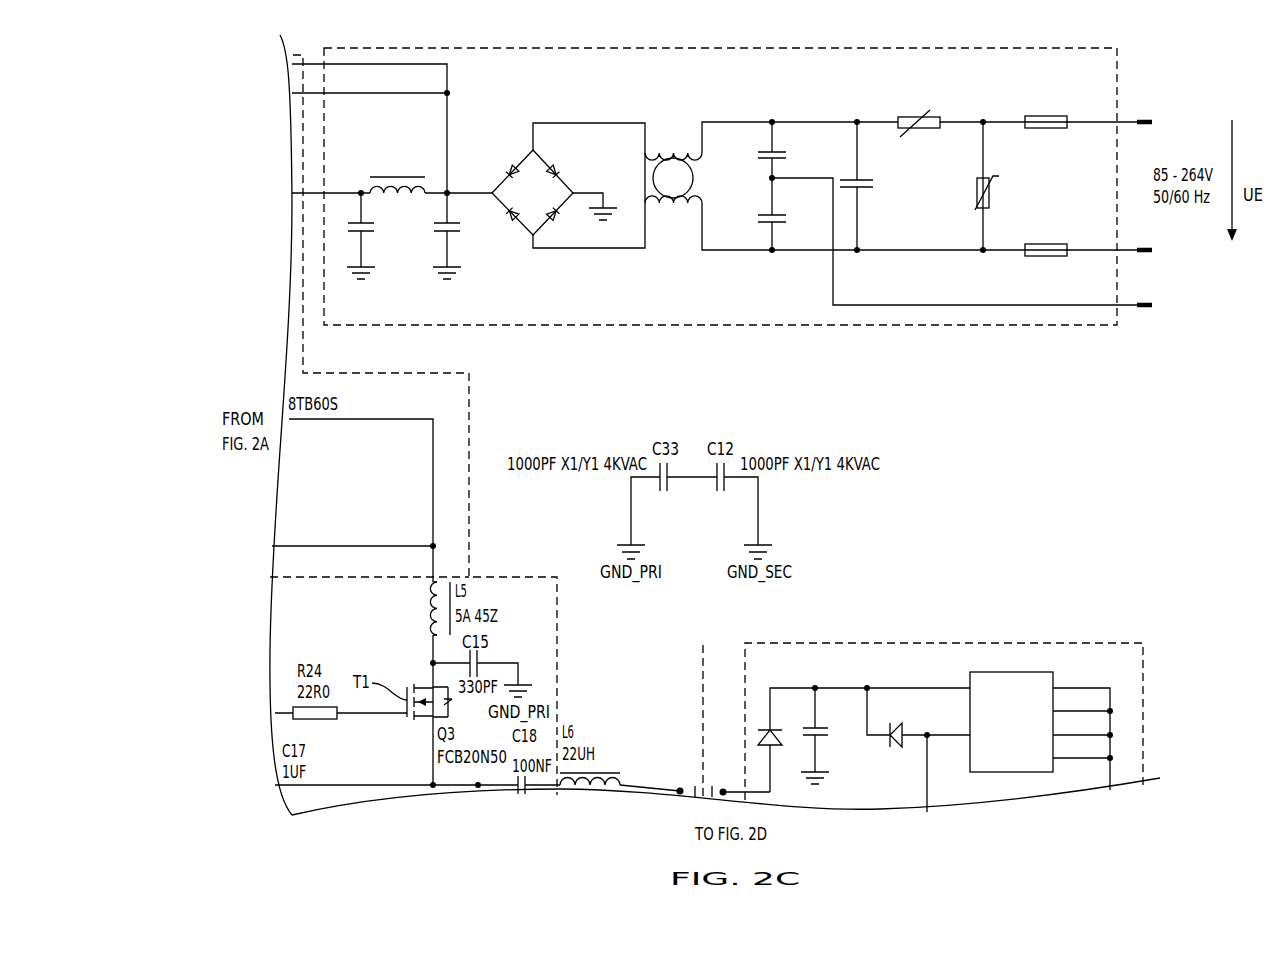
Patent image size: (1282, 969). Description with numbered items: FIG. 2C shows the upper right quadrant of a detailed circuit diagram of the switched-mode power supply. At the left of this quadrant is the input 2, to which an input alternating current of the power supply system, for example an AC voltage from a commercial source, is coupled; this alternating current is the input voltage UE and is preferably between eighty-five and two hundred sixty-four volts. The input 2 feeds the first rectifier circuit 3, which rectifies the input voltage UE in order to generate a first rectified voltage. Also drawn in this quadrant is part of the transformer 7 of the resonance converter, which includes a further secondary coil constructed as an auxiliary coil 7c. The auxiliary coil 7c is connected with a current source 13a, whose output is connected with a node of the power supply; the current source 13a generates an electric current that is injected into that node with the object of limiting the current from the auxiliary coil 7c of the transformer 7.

The input 2 is at (1167, 114).
The first rectifier circuit 3 is at (1047, 330).
The transformer 7 is at (700, 786).
The auxiliary coil 7c is at (723, 792).
The current source 13a is at (1085, 640).